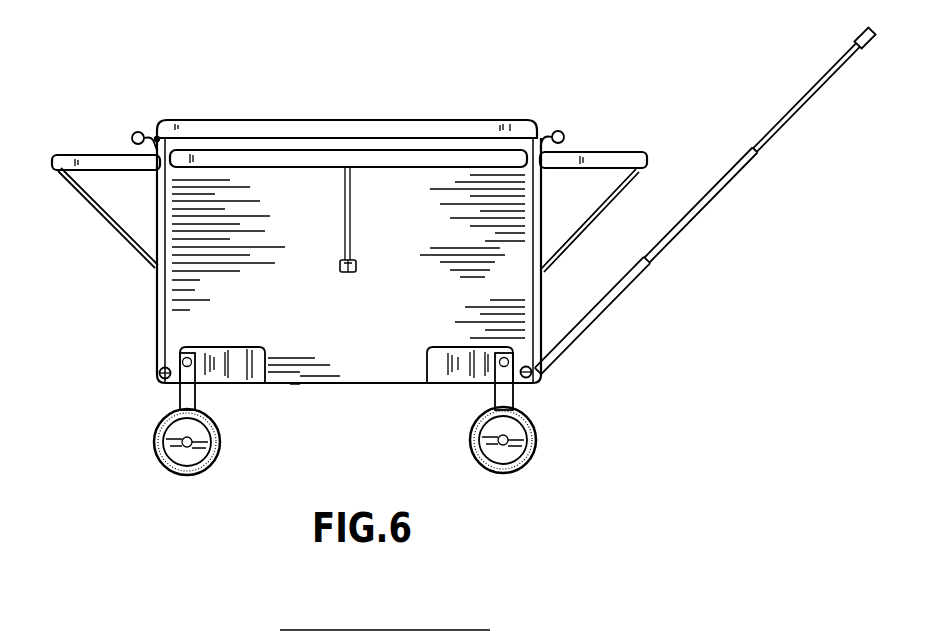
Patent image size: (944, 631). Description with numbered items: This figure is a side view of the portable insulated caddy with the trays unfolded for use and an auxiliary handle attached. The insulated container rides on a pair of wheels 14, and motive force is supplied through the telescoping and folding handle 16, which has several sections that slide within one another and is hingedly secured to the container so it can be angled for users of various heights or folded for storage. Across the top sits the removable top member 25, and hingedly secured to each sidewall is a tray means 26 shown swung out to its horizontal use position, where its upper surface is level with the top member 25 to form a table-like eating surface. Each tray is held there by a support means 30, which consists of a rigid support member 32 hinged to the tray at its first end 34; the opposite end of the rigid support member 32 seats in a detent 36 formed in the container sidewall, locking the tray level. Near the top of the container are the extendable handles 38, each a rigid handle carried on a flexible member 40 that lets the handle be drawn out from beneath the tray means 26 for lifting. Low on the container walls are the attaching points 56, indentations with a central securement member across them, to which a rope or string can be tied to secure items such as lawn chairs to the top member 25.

The wheels 14 is at (213, 462).
The telescoping and folding handle 16 is at (708, 207).
The removable top member 25 is at (350, 120).
The tray means 26 is at (98, 155).
The support means 30 is at (110, 250).
The rigid support member 32 is at (344, 210).
The first end 34 is at (640, 170).
The detent 36 is at (356, 267).
The extendable handle 38 is at (136, 132).
The flexible member 40 is at (157, 137).
The attaching point 56 is at (160, 378).